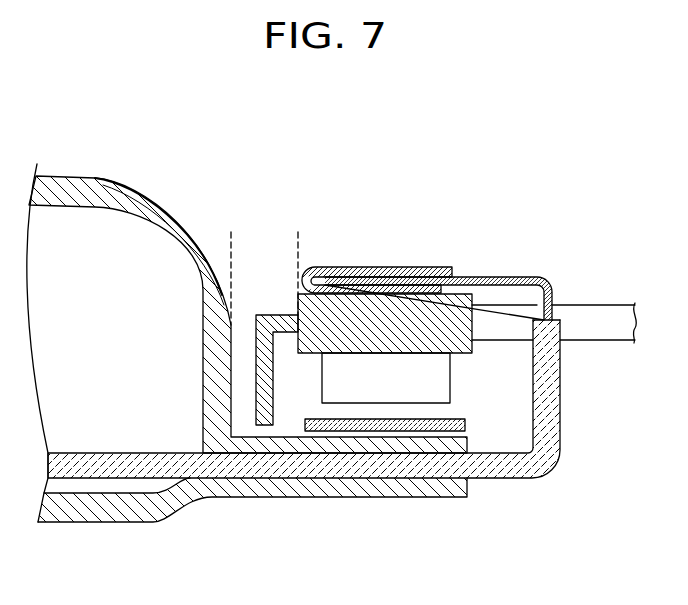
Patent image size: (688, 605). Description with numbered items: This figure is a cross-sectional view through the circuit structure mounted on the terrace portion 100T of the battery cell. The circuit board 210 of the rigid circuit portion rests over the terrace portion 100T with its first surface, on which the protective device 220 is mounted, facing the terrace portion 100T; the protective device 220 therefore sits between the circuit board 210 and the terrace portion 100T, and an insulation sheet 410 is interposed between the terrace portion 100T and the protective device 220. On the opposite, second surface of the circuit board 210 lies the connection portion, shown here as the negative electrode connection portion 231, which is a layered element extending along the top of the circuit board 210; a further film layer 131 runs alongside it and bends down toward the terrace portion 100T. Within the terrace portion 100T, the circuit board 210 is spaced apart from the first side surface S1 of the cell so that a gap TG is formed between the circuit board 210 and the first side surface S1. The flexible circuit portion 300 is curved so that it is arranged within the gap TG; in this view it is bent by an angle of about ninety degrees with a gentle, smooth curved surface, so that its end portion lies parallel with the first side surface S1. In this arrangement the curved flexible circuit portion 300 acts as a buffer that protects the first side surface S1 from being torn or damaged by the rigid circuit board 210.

The first side surface S1 is at (214, 282).
The gap TG is at (231, 237).
The flexible circuit portion 300 is at (262, 408).
The circuit board 210 is at (473, 292).
The protective device 220 is at (384, 393).
The negative electrode connection portion 231 is at (390, 267).
The flexible circuit film 131 is at (537, 287).
The terrace portion 100T is at (437, 432).
The insulation sheet 410 is at (326, 427).